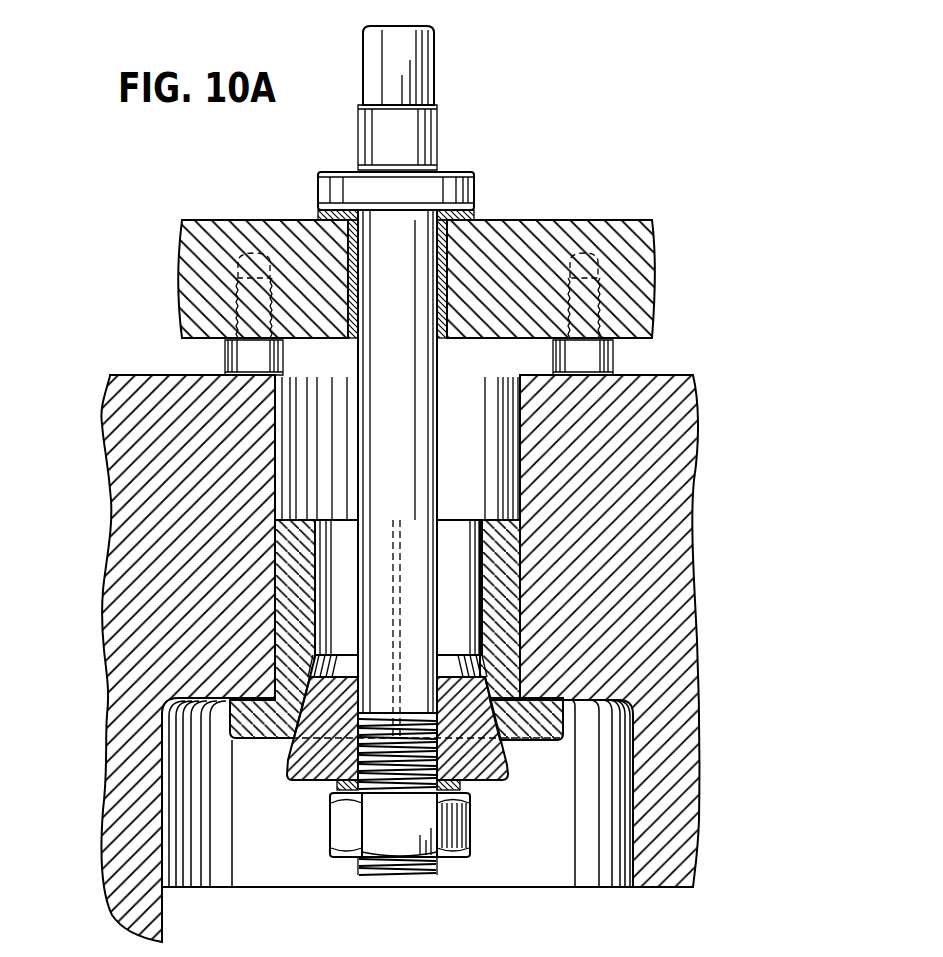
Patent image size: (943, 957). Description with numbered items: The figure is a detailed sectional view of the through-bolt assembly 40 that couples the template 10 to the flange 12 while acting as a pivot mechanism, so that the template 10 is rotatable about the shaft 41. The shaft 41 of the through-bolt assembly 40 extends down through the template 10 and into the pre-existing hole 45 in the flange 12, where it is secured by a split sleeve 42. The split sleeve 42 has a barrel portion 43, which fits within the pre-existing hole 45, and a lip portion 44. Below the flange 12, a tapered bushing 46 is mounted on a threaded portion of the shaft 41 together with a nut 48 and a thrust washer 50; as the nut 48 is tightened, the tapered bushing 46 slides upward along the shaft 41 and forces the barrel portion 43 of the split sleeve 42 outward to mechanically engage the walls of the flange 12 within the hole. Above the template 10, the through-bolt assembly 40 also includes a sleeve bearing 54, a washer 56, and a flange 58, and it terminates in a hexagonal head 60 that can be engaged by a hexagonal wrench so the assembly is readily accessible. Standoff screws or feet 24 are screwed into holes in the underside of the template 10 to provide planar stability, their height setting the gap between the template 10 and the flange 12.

The template 10 is at (602, 222).
The flange 12 is at (694, 446).
The standoff screws or feet 24 is at (225, 361).
The through-bolt assembly 40 is at (452, 96).
The shaft 41 is at (436, 462).
The split sleeve 42 is at (270, 638).
The barrel portion 43 is at (514, 583).
The lip portion 44 is at (550, 718).
The pre-existing hole 45 is at (270, 474).
The tapered bushing 46 is at (503, 760).
The nut 48 is at (333, 843).
The thrust washer 50 is at (335, 787).
The sleeve bearing 54 is at (448, 260).
The washer 56 is at (318, 214).
The flange 58 is at (447, 176).
The hexagonal head 60 is at (366, 62).